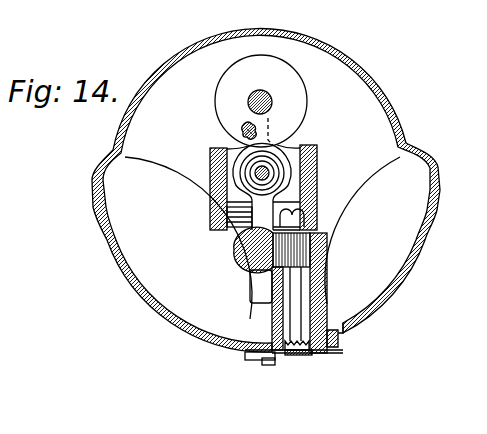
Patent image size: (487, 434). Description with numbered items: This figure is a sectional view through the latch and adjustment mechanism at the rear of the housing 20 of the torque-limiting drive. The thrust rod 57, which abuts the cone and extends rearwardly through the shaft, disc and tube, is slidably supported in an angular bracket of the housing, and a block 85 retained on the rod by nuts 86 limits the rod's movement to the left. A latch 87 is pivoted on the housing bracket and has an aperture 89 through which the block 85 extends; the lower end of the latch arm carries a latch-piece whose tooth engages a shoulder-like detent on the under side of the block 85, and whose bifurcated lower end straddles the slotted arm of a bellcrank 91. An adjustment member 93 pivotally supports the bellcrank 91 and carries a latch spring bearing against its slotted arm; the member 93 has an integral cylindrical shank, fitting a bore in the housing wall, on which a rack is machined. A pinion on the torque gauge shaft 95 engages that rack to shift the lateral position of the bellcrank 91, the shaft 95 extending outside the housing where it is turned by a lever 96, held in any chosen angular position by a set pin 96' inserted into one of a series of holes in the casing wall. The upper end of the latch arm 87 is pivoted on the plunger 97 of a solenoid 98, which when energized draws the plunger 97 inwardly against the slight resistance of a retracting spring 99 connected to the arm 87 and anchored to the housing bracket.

The casing 20 is at (357, 62).
The thrust rod 57 is at (270, 173).
The block 85 is at (250, 182).
The nuts 86 is at (278, 166).
The latch 87 is at (268, 118).
The aperture 89 is at (243, 173).
The bellcrank 91 is at (256, 208).
The adjustment member 93 is at (252, 258).
The torque gauge shaft 95 is at (291, 293).
The lever 96 is at (311, 363).
The set pin 96' is at (239, 366).
The plunger 97 is at (263, 91).
The solenoid 98 is at (294, 88).
The retracting spring 99 is at (244, 127).